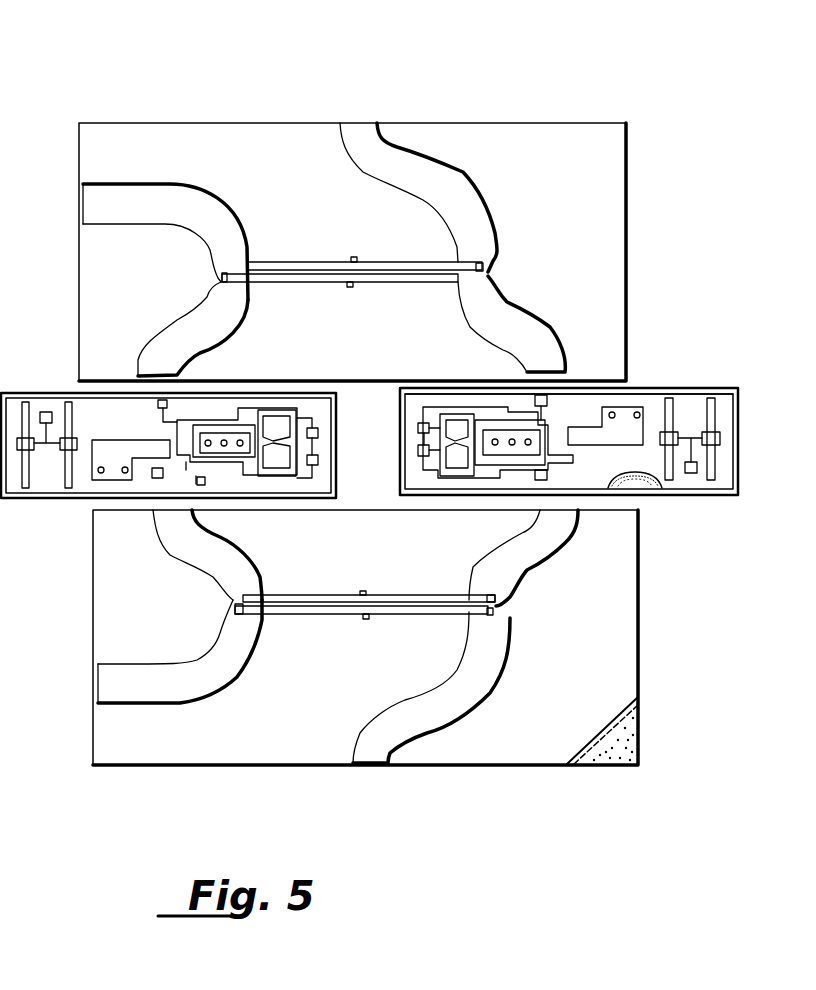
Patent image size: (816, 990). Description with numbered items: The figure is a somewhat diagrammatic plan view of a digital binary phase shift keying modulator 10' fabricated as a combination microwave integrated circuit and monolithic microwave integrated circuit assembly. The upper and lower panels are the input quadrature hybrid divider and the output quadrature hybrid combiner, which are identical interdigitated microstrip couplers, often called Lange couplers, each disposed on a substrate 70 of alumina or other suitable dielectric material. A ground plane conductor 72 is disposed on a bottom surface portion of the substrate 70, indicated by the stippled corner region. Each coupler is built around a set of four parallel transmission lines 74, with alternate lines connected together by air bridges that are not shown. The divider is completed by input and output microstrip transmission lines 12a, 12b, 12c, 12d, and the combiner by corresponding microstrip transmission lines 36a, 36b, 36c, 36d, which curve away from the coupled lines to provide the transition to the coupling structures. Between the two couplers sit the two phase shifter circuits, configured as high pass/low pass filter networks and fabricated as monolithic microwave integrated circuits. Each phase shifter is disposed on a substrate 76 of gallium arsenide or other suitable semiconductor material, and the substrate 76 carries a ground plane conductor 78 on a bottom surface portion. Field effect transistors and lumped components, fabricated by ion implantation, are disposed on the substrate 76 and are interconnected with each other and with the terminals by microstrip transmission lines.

The digital binary phase shift keying modulator 10' is at (134, 60).
The input microstrip transmission line 12a is at (93, 205).
The input microstrip transmission line 12b is at (160, 347).
The output microstrip transmission line 12c is at (545, 345).
The output microstrip transmission line 12d is at (357, 122).
The parallel transmission lines 74 is at (327, 263).
The substrate 76 is at (720, 398).
The ground plane conductor 78 is at (645, 490).
The input microstrip transmission line 36a is at (172, 538).
The input microstrip transmission line 36b is at (562, 535).
The output microstrip transmission line 36c is at (387, 738).
The output microstrip transmission line 36d is at (107, 683).
The substrate 70 is at (493, 767).
The ground plane conductor 72 is at (630, 766).